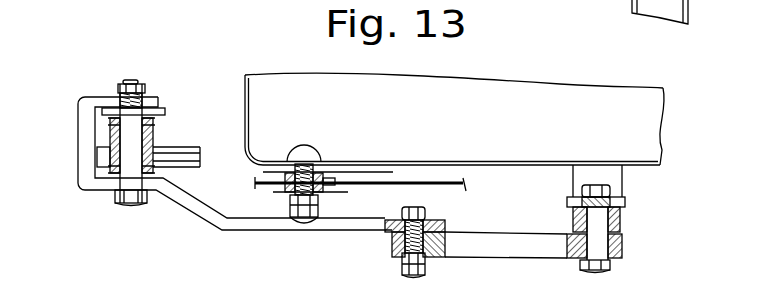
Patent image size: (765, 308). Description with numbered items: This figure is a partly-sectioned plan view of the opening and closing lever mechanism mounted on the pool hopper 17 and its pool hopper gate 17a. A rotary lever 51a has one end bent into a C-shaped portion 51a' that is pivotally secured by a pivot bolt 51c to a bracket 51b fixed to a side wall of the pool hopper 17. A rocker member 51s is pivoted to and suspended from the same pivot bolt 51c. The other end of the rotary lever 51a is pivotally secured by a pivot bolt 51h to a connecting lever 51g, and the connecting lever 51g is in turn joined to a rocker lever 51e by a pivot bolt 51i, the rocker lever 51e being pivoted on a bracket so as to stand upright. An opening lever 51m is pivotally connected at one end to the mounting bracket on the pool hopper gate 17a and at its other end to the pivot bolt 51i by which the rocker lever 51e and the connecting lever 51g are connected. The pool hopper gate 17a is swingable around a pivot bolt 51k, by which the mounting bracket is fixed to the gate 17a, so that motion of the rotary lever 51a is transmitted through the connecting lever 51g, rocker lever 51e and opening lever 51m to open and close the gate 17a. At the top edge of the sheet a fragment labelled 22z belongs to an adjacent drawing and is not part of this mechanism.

The pool hopper 17 is at (245, 103).
The pool hopper gate 17a is at (453, 182).
The rotary lever 51a is at (272, 223).
The bracket 51a' is at (90, 143).
The bracket 51b is at (190, 155).
The pivot bolt 51c is at (132, 186).
The rocker member 51s is at (163, 112).
The pivot bolt 51k is at (305, 157).
The pivot bolt 51h is at (420, 212).
The connecting lever 51g is at (492, 248).
The rocker lever 51e is at (625, 200).
The opening lever 51m is at (620, 218).
The pivot bolt 51i is at (597, 250).
The fragment 22z is at (656, 12).